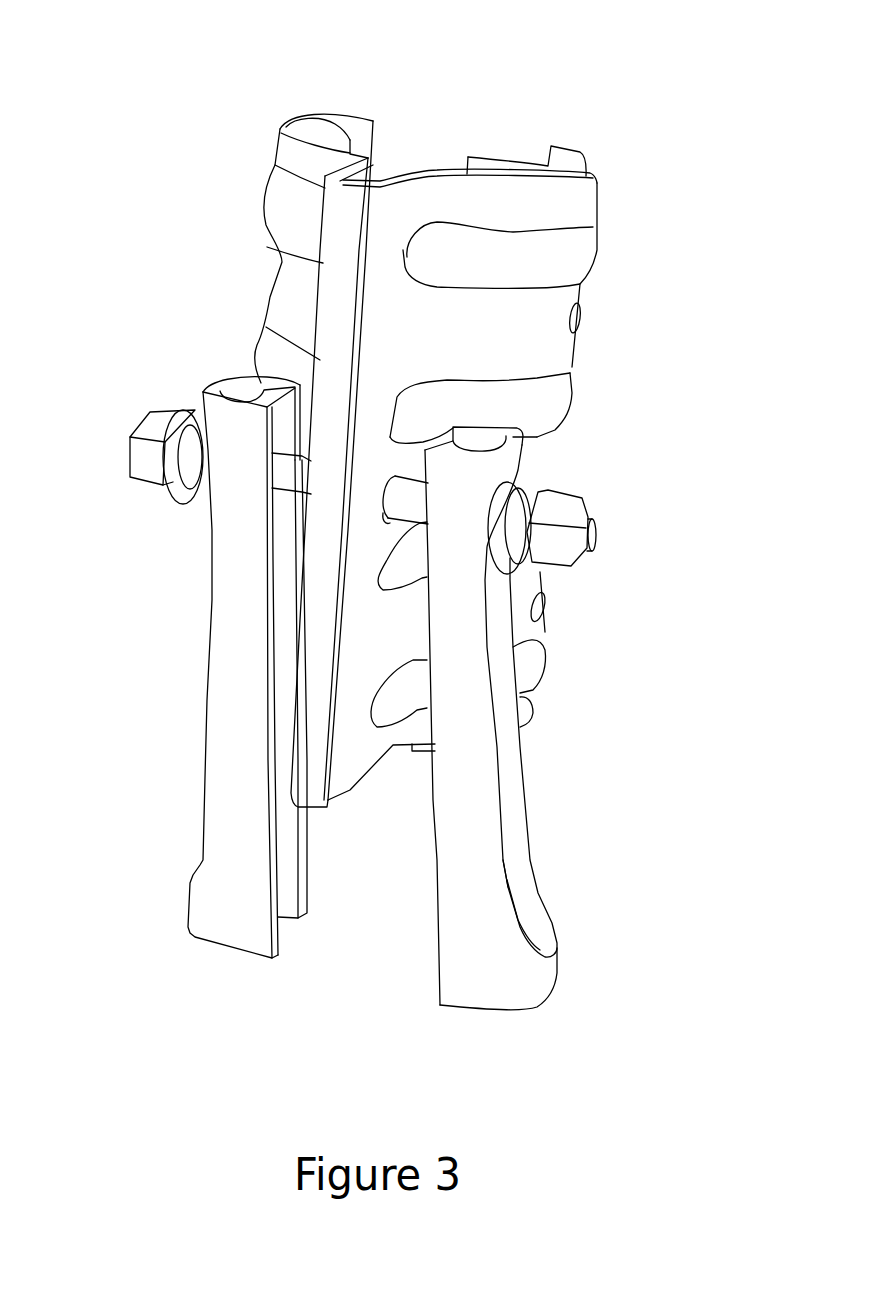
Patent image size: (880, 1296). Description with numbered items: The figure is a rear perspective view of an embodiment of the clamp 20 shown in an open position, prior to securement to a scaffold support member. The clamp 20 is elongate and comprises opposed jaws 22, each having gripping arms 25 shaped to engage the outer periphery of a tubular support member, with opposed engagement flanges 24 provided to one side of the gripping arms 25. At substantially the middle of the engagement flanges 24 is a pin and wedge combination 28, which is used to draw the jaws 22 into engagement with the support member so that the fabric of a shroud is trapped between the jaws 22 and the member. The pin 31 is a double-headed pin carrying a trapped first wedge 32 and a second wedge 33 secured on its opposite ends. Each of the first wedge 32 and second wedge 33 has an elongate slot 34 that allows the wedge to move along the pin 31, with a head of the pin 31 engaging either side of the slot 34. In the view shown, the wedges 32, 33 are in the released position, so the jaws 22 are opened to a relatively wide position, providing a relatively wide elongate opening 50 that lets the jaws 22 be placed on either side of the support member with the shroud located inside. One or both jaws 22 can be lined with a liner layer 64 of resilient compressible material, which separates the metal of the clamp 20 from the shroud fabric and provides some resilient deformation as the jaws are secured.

The clamp 20 is at (662, 63).
The jaws 22 is at (282, 131).
The engagement flanges 24 is at (335, 318).
The gripping arms 25 is at (502, 316).
The pin and wedge combination 28 is at (171, 527).
The pin 31 is at (412, 500).
The first wedge 32 is at (465, 718).
The second wedge 33 is at (232, 835).
The elongate slot 34 is at (513, 818).
The elongate opening 50 is at (432, 128).
The liner layer 64 is at (535, 172).